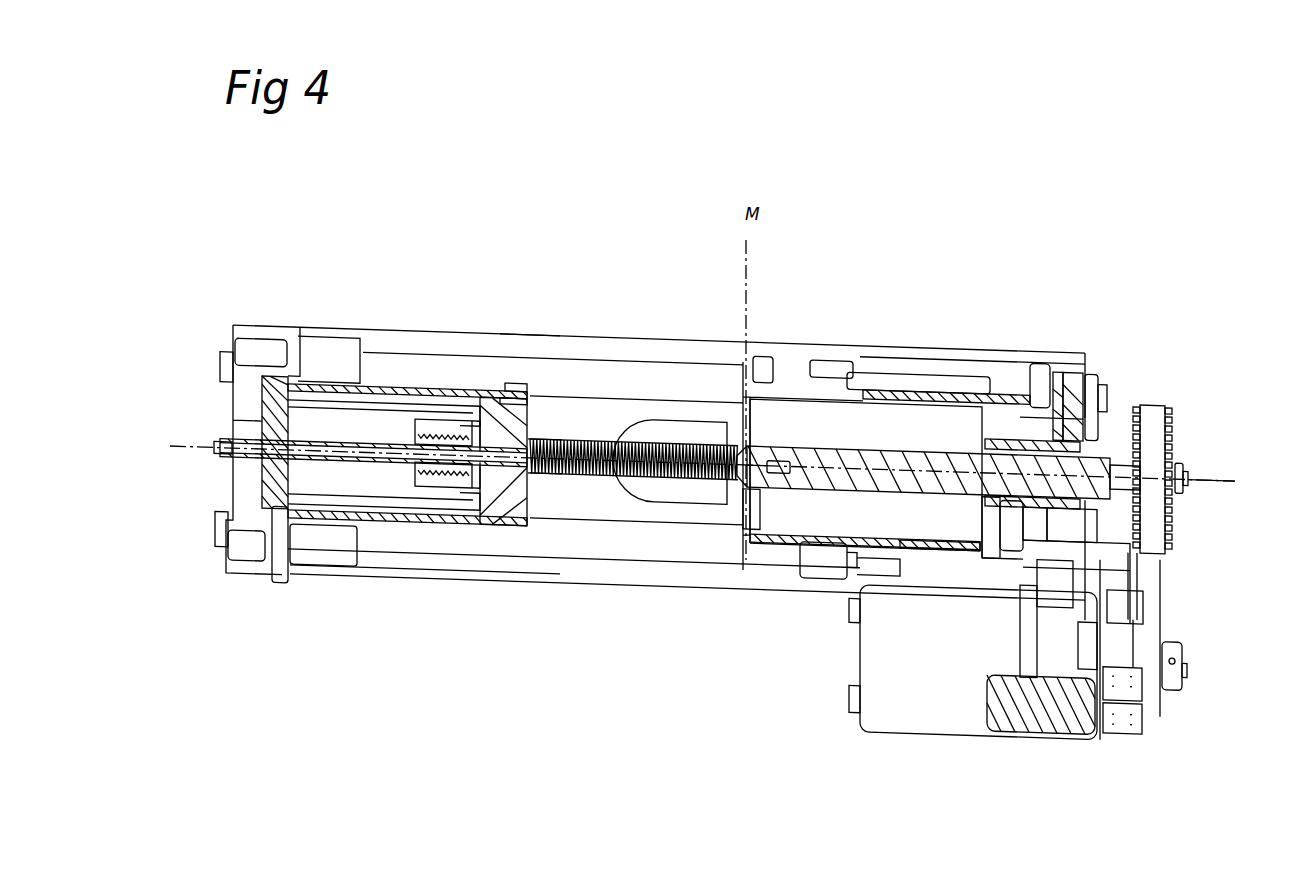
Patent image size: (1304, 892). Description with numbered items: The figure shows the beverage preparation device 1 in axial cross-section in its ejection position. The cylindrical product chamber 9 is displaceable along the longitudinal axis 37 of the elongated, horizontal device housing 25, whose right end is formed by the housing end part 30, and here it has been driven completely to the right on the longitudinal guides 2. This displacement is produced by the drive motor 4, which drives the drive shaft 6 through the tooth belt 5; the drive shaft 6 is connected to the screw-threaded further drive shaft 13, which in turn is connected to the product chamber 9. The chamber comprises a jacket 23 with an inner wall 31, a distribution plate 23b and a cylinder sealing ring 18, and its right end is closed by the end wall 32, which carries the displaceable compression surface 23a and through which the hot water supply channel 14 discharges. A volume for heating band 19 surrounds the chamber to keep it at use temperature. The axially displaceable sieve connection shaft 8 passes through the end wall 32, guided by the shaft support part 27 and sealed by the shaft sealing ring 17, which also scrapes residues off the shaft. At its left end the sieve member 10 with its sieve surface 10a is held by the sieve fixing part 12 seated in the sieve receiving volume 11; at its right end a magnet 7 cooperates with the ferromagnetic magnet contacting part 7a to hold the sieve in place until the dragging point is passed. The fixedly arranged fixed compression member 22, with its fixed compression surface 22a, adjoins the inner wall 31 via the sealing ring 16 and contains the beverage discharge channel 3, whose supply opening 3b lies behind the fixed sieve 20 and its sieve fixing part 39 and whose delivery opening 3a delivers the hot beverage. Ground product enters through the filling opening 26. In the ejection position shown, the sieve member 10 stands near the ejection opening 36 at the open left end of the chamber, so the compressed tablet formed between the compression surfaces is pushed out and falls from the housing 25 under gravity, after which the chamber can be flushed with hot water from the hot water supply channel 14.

The beverage preparation device 1 is at (276, 319).
The longitudinal guides 2 is at (407, 367).
The beverage discharge channel 3 is at (316, 438).
The delivery opening 3a is at (219, 447).
The supply opening 3b is at (447, 470).
The drive motor 4 is at (948, 688).
The tooth belt 5 is at (1160, 683).
The drive shaft 6 is at (1184, 466).
The magnet 7 is at (1090, 478).
The magnet contacting part 7a is at (1115, 478).
The sieve connection shaft 8 is at (904, 452).
The product chamber 9 is at (827, 436).
The sieve member 10 is at (742, 505).
The sieve surface 10a is at (745, 449).
The sieve receiving volume 11 is at (793, 508).
The sieve fixing part 12 is at (727, 452).
The further drive shaft 13 is at (533, 475).
The hot water supply channel 14 is at (1073, 403).
The sealing ring 16 is at (522, 390).
The shaft sealing ring 17 is at (982, 494).
The cylinder sealing ring 18 is at (1060, 650).
The volume for heating band 19 is at (955, 396).
The fixed sieve 20 is at (537, 480).
The fixed compression member 22 is at (413, 527).
The fixed compression surface 22a is at (515, 392).
The jacket 23 is at (882, 370).
The displaceable compression surface 23a is at (1022, 522).
The distribution plate 23b is at (1035, 403).
The device housing 25 is at (516, 331).
The filling opening 26 is at (790, 408).
The shaft support part 27 is at (1080, 592).
The housing end part 30 is at (1068, 442).
The inner wall 31 is at (929, 514).
The end wall 32 is at (980, 408).
The ejection opening 36 is at (753, 515).
The longitudinal axis 37 is at (1225, 478).
The sieve fixing part 39 is at (540, 449).